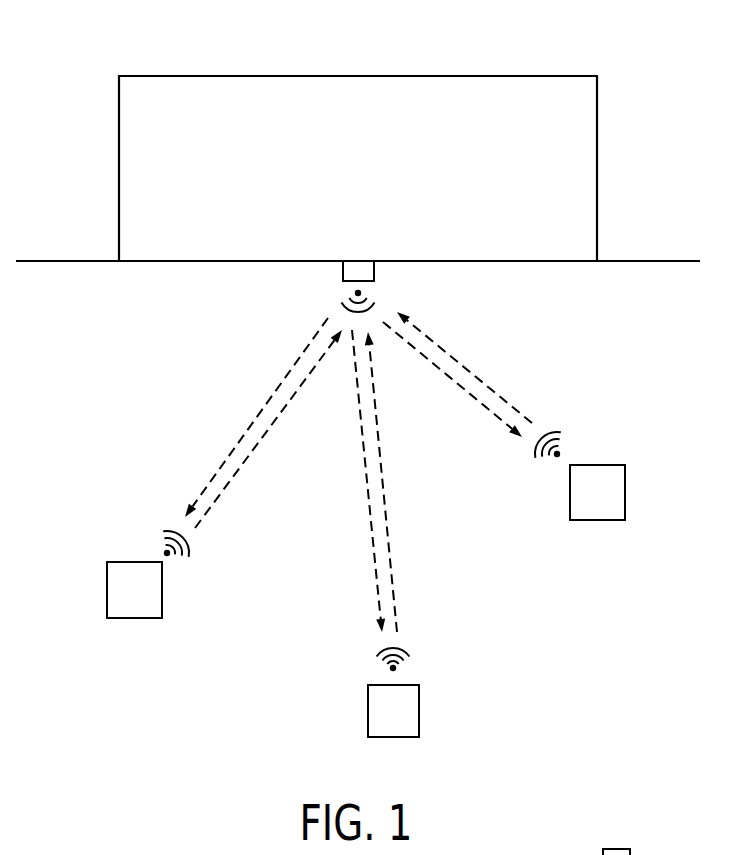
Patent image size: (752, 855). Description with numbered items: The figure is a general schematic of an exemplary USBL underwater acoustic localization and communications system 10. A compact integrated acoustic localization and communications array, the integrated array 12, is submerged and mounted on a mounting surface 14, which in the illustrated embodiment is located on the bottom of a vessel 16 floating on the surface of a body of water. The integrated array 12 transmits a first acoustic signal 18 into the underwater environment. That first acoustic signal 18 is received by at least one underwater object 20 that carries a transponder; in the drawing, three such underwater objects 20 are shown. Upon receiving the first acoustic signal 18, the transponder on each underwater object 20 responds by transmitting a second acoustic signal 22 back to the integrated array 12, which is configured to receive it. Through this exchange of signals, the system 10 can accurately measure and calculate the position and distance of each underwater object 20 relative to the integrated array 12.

The USBL underwater acoustic localization and communications system 10 is at (578, 50).
The integrated array 12 is at (360, 272).
The mounting surface 14 is at (170, 261).
The vessel 16 is at (145, 165).
The first acoustic signal 18 is at (347, 296).
The underwater object 20 is at (107, 590).
The second acoustic signal 22 is at (190, 548).